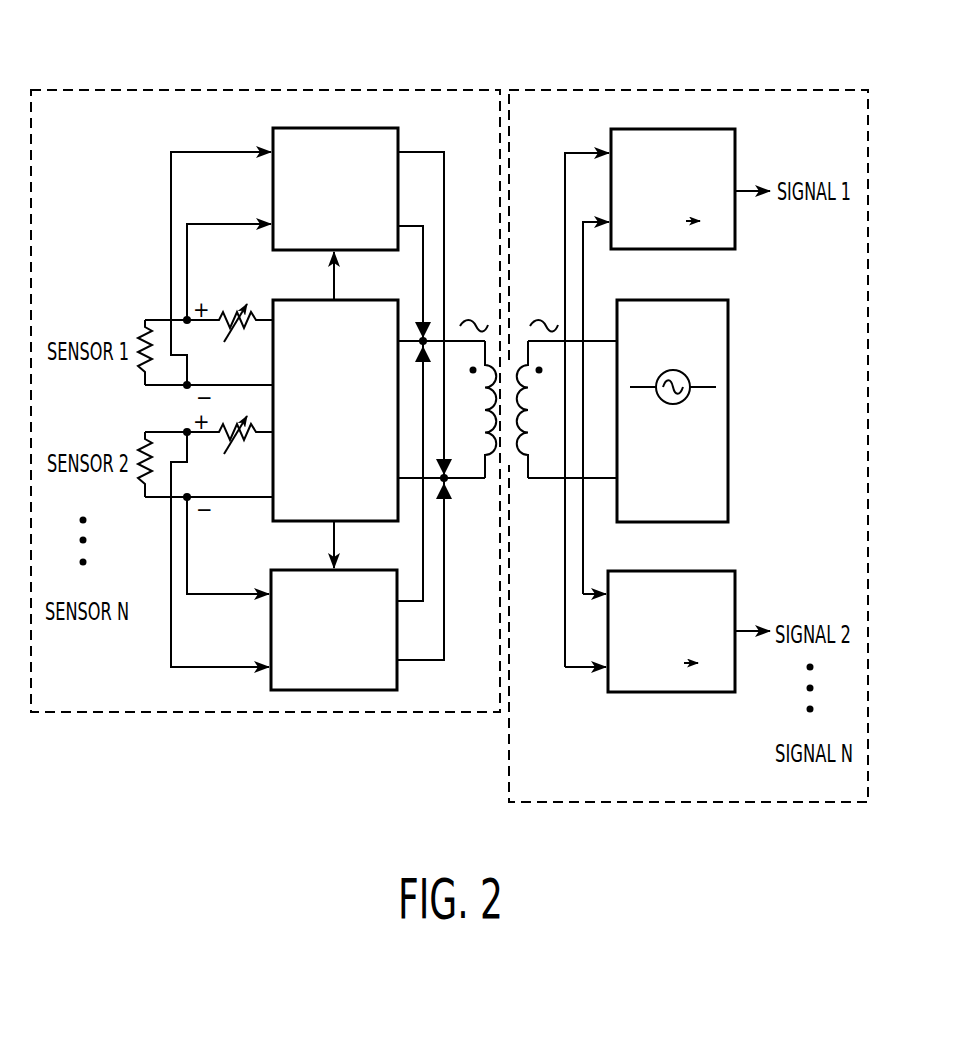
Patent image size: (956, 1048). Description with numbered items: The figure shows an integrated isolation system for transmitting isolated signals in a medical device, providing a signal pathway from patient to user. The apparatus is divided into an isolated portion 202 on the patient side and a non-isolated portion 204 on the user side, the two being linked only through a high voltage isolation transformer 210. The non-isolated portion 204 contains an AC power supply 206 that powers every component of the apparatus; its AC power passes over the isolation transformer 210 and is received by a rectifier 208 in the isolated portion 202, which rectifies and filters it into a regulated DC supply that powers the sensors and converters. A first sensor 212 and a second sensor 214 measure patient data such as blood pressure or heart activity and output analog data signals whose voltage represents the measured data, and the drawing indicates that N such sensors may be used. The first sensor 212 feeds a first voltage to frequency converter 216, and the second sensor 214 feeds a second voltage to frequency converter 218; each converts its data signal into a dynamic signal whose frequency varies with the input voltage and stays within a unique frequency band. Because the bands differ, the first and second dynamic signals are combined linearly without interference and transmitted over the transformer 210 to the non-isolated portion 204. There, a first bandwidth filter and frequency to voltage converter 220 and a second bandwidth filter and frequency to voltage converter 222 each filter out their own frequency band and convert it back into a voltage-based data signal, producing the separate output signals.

The isolated portion 202 is at (117, 78).
The non-isolated portion 204 is at (733, 78).
The power supply 206 is at (730, 422).
The rectifier 208 is at (278, 524).
The isolation transformer 210 is at (490, 487).
The sensor 1 212 is at (144, 335).
The sensor 2 214 is at (138, 484).
The first voltage to frequency converter 216 is at (398, 130).
The second voltage to frequency converter 218 is at (398, 688).
The first bandwidth filter and frequency to voltage converter 220 is at (737, 150).
The second bandwidth filter and frequency to voltage converter 222 is at (737, 590).